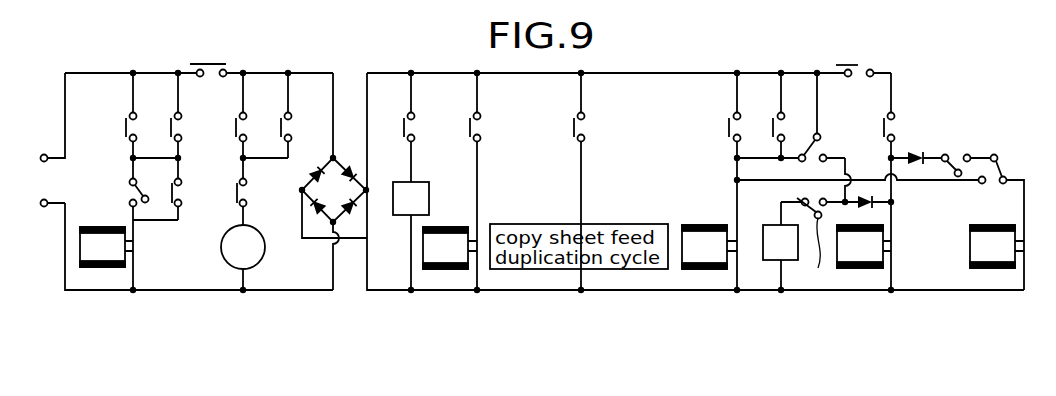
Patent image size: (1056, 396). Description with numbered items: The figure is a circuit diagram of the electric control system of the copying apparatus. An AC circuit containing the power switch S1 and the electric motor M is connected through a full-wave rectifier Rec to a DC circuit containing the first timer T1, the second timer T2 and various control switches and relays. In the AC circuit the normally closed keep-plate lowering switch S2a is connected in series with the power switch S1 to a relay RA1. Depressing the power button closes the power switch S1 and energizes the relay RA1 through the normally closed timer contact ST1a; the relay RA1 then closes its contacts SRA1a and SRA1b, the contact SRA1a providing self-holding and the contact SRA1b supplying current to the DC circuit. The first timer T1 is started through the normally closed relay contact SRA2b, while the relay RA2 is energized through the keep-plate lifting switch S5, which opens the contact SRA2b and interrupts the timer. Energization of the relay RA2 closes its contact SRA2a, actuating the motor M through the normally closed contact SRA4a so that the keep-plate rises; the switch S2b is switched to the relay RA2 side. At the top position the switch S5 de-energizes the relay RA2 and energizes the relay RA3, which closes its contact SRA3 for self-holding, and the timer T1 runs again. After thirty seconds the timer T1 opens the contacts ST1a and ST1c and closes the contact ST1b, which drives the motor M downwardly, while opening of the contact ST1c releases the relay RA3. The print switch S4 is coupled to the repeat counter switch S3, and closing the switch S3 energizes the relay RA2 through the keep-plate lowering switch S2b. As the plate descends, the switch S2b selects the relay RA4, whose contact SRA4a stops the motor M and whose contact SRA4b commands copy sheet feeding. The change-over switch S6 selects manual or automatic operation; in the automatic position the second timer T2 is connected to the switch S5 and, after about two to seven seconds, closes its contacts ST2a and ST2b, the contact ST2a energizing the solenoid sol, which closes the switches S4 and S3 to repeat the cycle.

The AC circuit AC is at (45, 181).
The power switch S1 is at (126, 130).
The keep-plate lowering switch S2a is at (136, 195).
The relay RA1 is at (106, 247).
The relay contact SRA1b is at (221, 60).
The relay contact SRA1a is at (182, 117).
The timer contact ST1a is at (174, 193).
The relay contact SRA2a is at (243, 125).
The timer contact ST1b is at (283, 128).
The relay contact SRA4a is at (240, 198).
The electric motor M is at (243, 257).
The rectifier Rec is at (302, 190).
The relay contact SRA2b is at (438, 127).
The first timer T1 is at (411, 236).
The timer contact ST2a is at (478, 129).
The solenoid sol is at (450, 248).
The relay contact SRA4b is at (583, 128).
The print switch S4 is at (728, 131).
The relay RA2 is at (709, 247).
The timer contact ST2b is at (779, 114).
The timer contact ST1c is at (858, 60).
The keep-plate lifting switch S5 is at (820, 146).
The change-over switch S6 is at (800, 204).
The second timer T2 is at (780, 246).
The relay RA3 is at (864, 246).
The relay contact SRA3 is at (892, 120).
The repeat counter switch S3 is at (951, 166).
The keep-plate lowering switch S2b is at (995, 175).
The relay RA4 is at (997, 246).